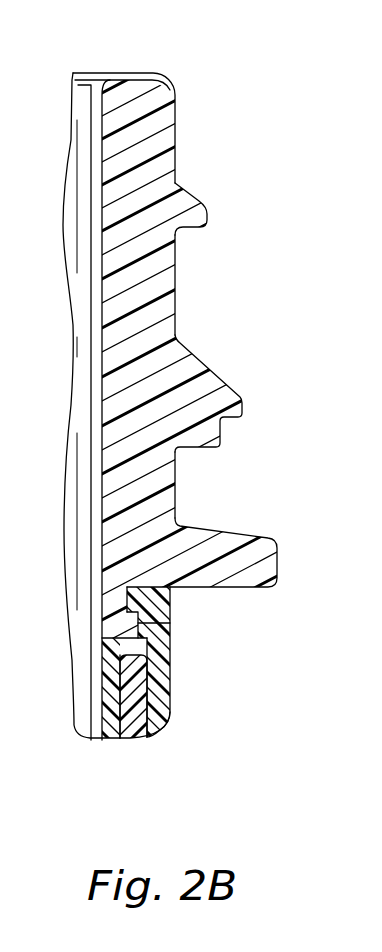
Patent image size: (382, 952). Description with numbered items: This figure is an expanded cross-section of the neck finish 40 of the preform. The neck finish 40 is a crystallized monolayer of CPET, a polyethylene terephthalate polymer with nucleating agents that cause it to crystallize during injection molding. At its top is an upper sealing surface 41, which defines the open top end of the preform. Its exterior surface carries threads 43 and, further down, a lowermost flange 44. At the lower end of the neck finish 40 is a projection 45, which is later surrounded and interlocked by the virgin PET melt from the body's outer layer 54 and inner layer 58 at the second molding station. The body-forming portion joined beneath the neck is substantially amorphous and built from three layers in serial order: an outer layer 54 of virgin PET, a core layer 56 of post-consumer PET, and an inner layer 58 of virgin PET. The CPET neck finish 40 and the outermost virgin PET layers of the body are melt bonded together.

The neck finish 40 is at (212, 318).
The upper sealing surface 41 is at (132, 73).
The threads 43 is at (208, 213).
The lowermost flange 44 is at (277, 557).
The projection 45 is at (170, 623).
The outer layer 54 is at (170, 700).
The core layer 56 is at (135, 740).
The inner layer 58 is at (107, 702).